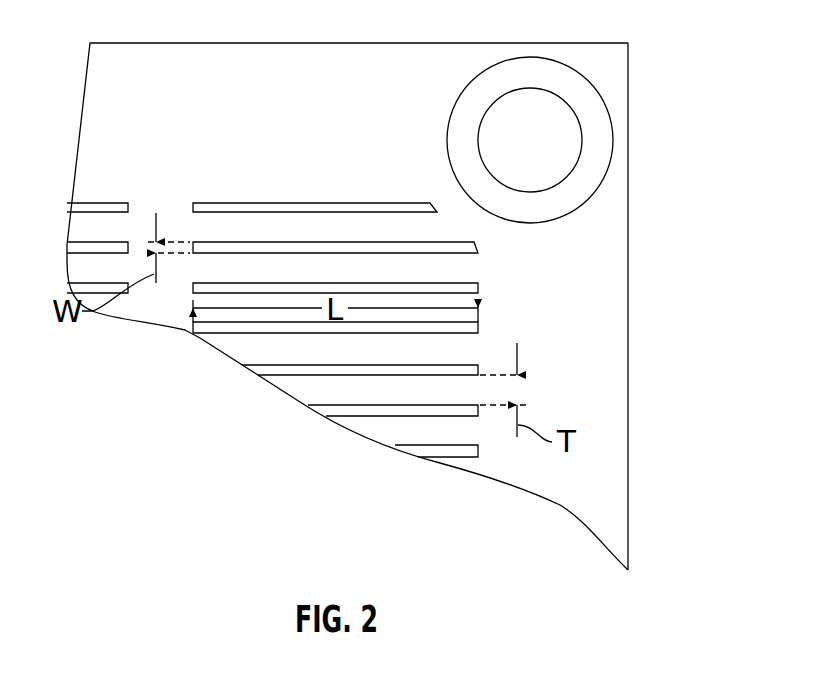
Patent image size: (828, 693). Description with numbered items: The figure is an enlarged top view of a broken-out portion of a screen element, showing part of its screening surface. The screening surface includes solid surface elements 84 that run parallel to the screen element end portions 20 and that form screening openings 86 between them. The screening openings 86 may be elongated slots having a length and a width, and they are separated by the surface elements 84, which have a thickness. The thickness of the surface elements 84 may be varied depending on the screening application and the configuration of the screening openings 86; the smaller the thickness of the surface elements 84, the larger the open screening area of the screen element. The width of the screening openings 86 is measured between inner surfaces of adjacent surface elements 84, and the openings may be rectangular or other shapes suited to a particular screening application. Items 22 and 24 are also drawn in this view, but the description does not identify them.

The screen element end portion 20 is at (318, 43).
The panel edge 22 is at (628, 248).
The hole 24 is at (530, 140).
The solid surface element 84 is at (303, 386).
The screening opening 86 is at (227, 203).